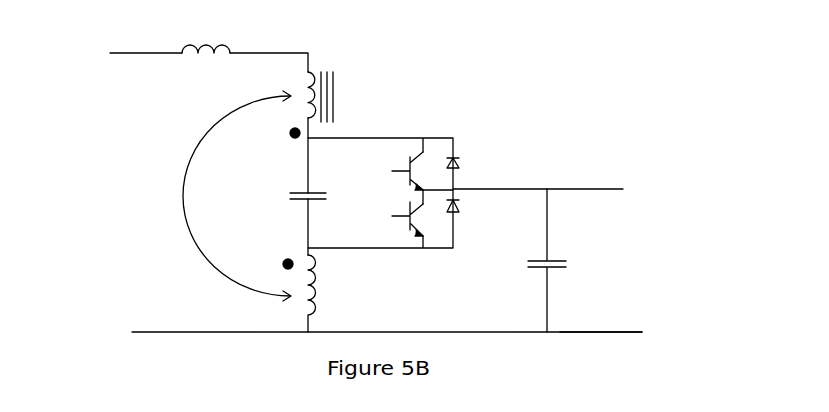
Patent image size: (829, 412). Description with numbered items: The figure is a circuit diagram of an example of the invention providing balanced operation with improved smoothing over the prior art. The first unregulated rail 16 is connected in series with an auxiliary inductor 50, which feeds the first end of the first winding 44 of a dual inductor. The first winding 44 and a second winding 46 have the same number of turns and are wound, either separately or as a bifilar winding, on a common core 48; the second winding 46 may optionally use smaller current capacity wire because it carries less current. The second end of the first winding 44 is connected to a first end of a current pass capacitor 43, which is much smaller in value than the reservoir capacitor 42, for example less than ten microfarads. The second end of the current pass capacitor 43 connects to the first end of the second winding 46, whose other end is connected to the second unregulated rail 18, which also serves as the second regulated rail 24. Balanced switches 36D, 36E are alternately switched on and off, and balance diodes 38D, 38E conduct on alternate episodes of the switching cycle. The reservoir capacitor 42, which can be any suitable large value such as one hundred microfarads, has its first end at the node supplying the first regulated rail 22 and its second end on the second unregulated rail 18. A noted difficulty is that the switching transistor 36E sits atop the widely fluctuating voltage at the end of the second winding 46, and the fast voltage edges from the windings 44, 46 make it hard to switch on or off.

The first unregulated rail 16 is at (117, 55).
The second unregulated rail 18 is at (208, 331).
The first regulated rail 22 is at (595, 190).
The second regulated rail 24 is at (583, 332).
The balanced switch 36D is at (408, 168).
The balanced switch 36E is at (404, 215).
The balance diode 38D is at (460, 160).
The balance diode 38E is at (458, 207).
The reservoir capacitor 42 is at (538, 268).
The current pass capacitor 43 is at (303, 203).
The first winding 44 is at (303, 112).
The second winding 46 is at (313, 277).
The common core 48 is at (330, 102).
The auxiliary inductor 50 is at (203, 54).